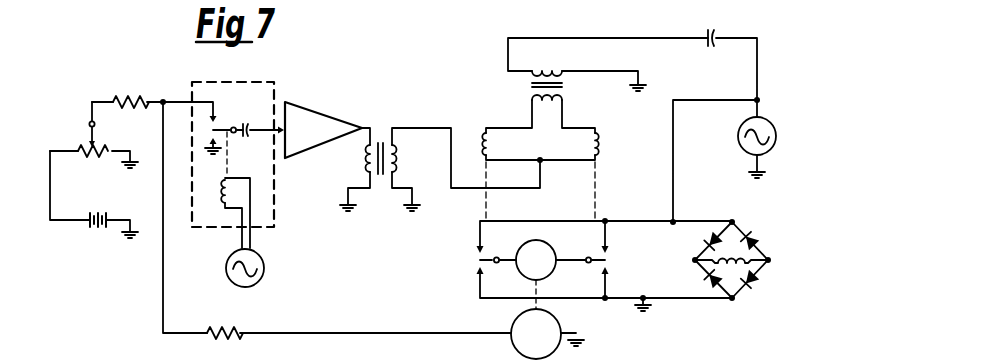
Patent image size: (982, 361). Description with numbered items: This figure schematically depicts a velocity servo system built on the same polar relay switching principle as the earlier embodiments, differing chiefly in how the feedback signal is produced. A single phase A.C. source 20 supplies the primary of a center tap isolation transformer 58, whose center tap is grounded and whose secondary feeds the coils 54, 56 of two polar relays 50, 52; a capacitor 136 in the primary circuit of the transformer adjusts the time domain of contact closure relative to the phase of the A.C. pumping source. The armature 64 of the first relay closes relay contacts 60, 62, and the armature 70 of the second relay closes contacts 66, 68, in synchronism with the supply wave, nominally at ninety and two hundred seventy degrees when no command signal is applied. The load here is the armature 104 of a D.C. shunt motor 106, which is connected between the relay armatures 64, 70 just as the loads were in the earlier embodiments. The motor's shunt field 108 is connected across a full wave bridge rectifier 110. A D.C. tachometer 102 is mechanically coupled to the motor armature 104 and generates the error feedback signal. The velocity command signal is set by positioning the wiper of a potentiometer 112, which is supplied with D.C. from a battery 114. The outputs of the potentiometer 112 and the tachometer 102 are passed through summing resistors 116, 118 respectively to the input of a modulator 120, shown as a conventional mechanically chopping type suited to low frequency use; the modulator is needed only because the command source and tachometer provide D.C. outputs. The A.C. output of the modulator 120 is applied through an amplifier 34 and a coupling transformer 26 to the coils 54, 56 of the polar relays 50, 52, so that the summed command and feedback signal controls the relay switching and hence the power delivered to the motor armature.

The single phase A.C. source 20 is at (772, 122).
The coupling transformer 26 is at (378, 138).
The amplifier 34 is at (301, 104).
The polar relay 50 is at (484, 124).
The polar relay 52 is at (598, 124).
The coil 54 is at (491, 140).
The coil 56 is at (590, 152).
The center tap isolation transformer 58 is at (548, 70).
The relay contact 60 is at (477, 241).
The relay contact 62 is at (477, 282).
The armature 64 is at (480, 260).
The contact 66 is at (608, 240).
The contact 68 is at (610, 281).
The armature 70 is at (607, 261).
The D.C. tachometer 102 is at (514, 348).
The armature 104 is at (540, 243).
The D.C. shunt motor 106 is at (707, 286).
The shunt field 108 is at (740, 266).
The full wave bridge rectifier 110 is at (748, 228).
The potentiometer 112 is at (97, 154).
The battery 114 is at (92, 226).
The summing resistor 116 is at (137, 96).
The summing resistor 118 is at (218, 330).
The modulator 120 is at (241, 82).
The capacitor 136 is at (713, 36).